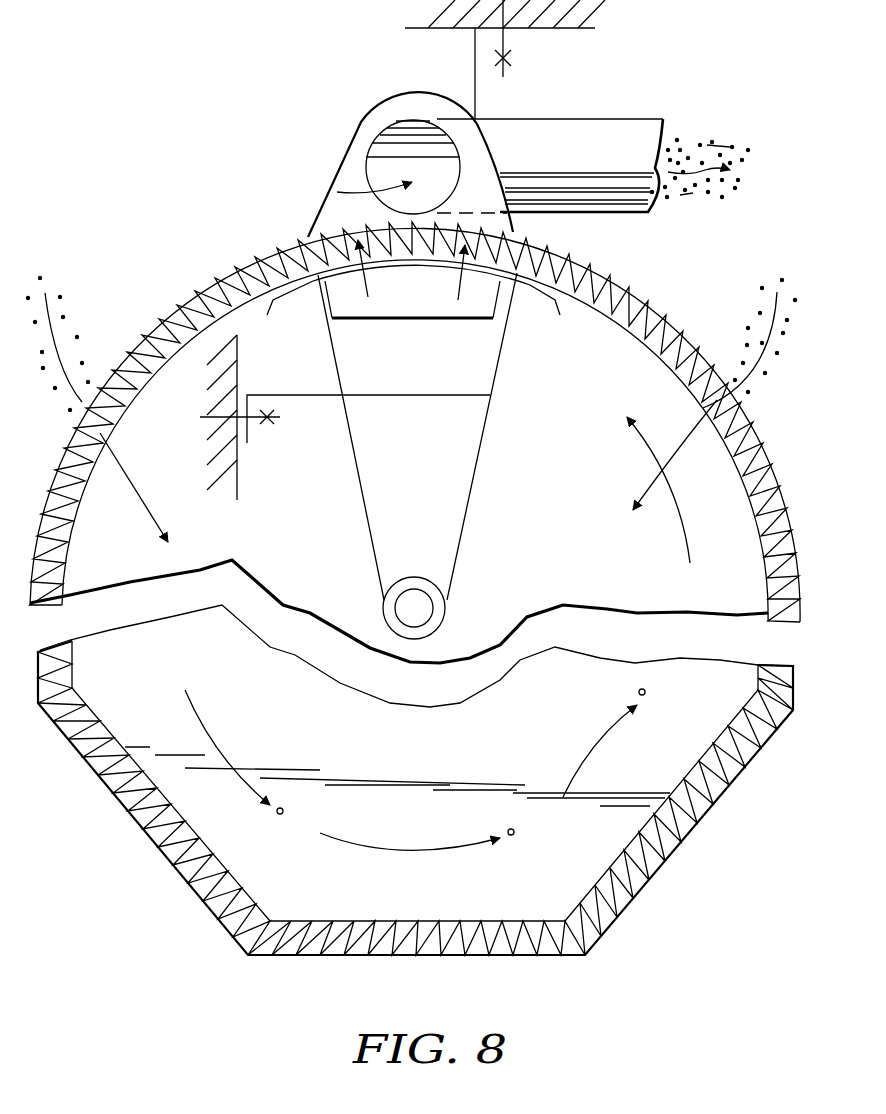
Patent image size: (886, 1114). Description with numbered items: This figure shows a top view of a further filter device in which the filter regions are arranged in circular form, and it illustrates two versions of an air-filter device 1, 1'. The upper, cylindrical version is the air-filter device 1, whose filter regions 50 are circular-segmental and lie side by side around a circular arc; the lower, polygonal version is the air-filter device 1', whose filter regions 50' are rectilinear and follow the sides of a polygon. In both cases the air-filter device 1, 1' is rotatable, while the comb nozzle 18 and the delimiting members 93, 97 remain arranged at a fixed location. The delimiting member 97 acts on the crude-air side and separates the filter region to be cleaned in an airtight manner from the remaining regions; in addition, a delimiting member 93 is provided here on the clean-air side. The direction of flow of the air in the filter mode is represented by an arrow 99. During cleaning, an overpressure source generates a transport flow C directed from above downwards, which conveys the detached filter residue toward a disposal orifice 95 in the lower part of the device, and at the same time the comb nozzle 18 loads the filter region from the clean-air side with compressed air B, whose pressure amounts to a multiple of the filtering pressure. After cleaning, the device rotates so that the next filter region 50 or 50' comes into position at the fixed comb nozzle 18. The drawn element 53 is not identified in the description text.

The air-filter device 1 is at (444, 451).
The air-filter device 1' is at (400, 762).
The filter region 50 is at (415, 422).
The filter region 50' is at (415, 798).
The conveyor / feed tube 53 is at (603, 118).
The delimiting member 93 is at (497, 360).
The disposal orifice 95 is at (377, 137).
The delimiting member 97 is at (422, 97).
The arrow for direction of air flow 99 is at (60, 333).
The comb nozzle 18 is at (437, 338).
The compressed air B is at (345, 243).
The transport flow C is at (355, 191).